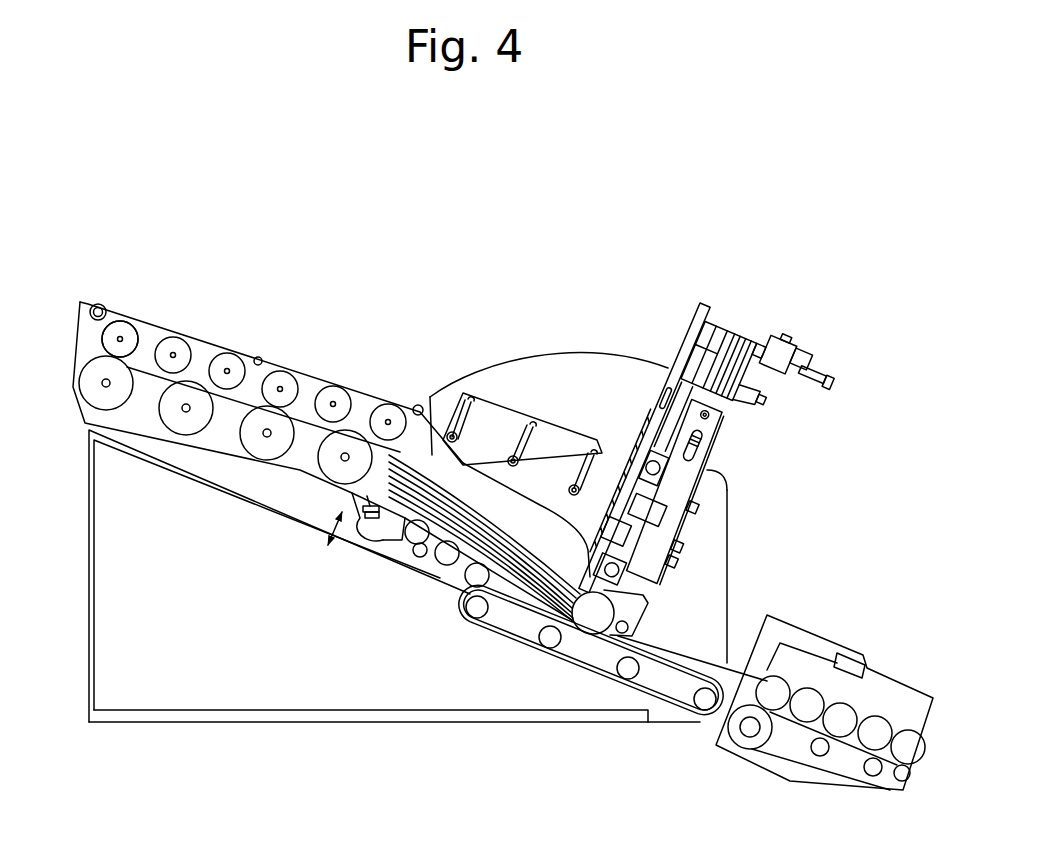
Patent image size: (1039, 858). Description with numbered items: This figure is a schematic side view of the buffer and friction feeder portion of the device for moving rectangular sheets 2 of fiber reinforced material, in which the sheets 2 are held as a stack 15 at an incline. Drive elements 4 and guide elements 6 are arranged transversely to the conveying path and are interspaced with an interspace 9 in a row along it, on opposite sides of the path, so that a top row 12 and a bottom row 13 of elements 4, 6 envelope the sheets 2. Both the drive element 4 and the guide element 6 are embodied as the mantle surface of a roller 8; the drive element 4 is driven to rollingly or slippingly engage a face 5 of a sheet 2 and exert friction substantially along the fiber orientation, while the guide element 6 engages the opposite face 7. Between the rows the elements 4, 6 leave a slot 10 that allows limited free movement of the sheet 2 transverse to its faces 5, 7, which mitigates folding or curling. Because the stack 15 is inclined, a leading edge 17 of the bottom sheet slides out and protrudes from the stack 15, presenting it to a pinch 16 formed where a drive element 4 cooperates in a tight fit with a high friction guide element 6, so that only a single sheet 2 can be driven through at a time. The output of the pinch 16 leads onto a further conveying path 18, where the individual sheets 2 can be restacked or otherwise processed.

The sheet 2 is at (414, 440).
The drive element 4 is at (105, 384).
The face 5 is at (310, 390).
The guide element 6 is at (112, 330).
The opposite face 7 is at (310, 390).
The roller 8 is at (137, 266).
The interspace 9 is at (767, 515).
The slot 10 is at (97, 343).
The top row 12 is at (225, 454).
The bottom row 13 is at (175, 345).
The stack 15 is at (514, 527).
The pinch 16 is at (600, 613).
The leading edge 17 is at (473, 502).
The further conveying path 18 is at (905, 707).